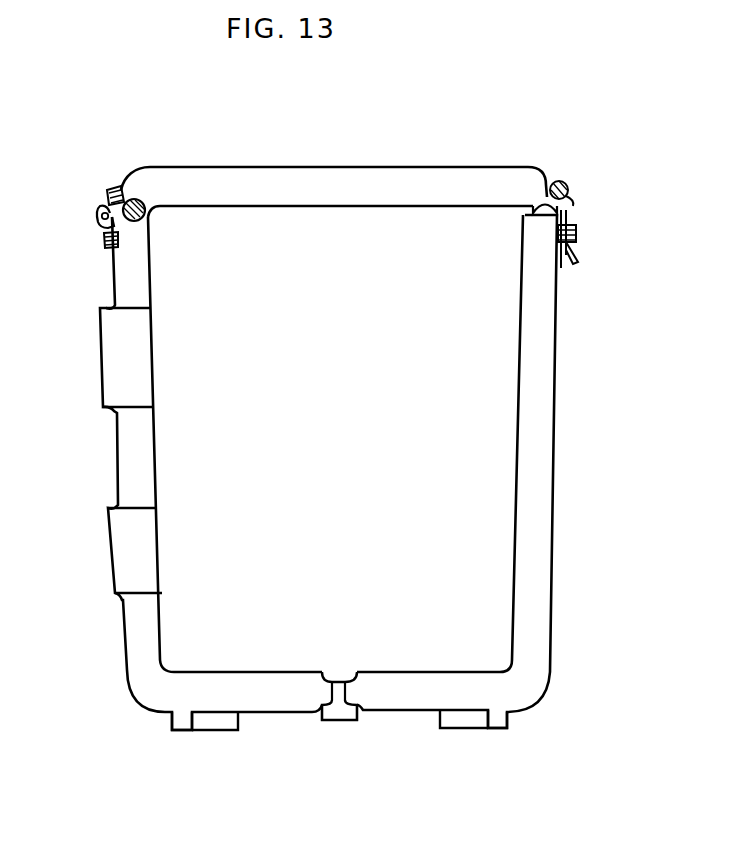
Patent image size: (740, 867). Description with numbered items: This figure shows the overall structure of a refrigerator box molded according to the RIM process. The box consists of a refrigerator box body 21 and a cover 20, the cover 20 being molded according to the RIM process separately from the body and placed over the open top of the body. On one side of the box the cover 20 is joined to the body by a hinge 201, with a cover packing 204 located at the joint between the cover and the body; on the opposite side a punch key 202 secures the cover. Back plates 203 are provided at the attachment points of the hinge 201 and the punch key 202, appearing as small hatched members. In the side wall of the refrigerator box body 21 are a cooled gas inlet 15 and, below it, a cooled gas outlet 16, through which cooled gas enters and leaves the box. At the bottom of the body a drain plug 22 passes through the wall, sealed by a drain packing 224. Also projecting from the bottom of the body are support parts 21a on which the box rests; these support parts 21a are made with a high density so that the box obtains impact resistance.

The cover 20 is at (345, 178).
The refrigerator box body 21 is at (119, 456).
The support parts 21a is at (183, 722).
The drain plug 22 is at (333, 722).
The drain packing 224 is at (360, 714).
The cooled gas inlet 15 is at (110, 358).
The cooled gas outlet 16 is at (118, 549).
The hinge 201 is at (97, 212).
The punch key 202 is at (578, 218).
The back plate 203 is at (112, 192).
The cover packing 204 is at (134, 196).